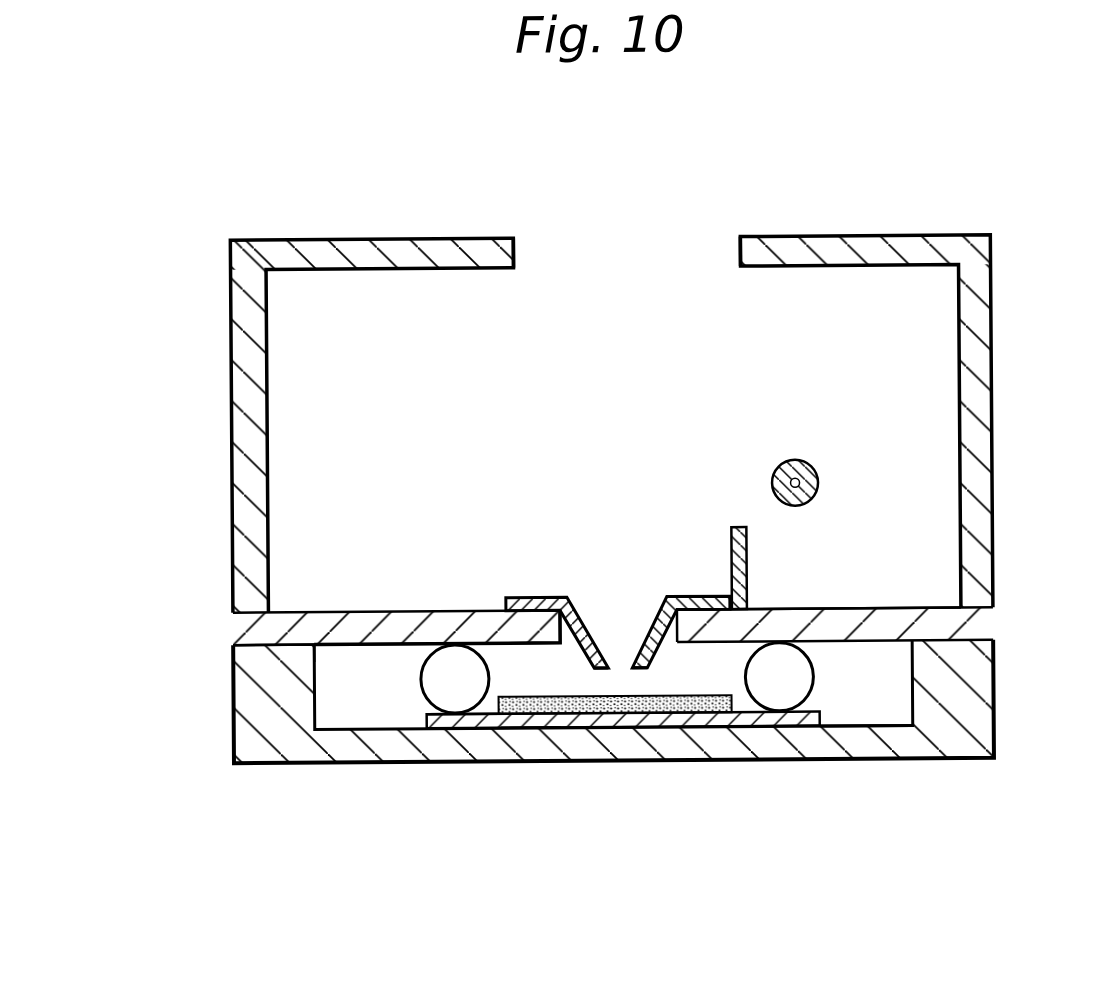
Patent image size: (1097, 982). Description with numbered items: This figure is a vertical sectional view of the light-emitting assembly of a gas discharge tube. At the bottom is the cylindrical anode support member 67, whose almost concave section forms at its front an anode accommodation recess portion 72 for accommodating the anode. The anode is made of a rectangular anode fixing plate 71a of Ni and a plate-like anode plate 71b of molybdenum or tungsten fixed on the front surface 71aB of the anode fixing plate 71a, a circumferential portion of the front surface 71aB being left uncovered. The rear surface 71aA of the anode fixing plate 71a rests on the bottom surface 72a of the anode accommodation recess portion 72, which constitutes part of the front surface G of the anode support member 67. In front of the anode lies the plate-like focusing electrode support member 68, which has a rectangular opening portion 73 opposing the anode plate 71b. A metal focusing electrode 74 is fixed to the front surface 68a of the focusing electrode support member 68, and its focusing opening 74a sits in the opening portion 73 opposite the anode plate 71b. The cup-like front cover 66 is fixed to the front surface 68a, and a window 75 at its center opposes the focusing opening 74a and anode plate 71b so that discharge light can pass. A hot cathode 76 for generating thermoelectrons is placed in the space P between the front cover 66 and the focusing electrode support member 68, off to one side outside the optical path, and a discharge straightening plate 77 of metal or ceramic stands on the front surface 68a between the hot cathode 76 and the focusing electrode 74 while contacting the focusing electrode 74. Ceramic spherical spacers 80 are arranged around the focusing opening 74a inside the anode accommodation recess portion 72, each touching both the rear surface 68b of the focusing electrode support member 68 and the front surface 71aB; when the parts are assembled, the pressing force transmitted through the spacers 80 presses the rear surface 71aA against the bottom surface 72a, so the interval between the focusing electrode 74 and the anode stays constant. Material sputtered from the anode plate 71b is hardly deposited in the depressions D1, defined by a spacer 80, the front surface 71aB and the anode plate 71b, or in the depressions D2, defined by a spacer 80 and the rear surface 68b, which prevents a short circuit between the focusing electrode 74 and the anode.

The front cover 66 is at (982, 419).
The anode support member 67 is at (665, 746).
The focusing electrode support member 68 is at (622, 602).
The front surface of the focusing electrode support member 68a is at (900, 609).
The rear surface of the focusing electrode support member 68b is at (347, 650).
The anode fixing plate 71a is at (626, 807).
The rear surface of the anode fixing plate 71aA is at (533, 727).
The front surface of the anode fixing plate 71aB is at (497, 718).
The anode plate 71b is at (578, 705).
The anode accommodation recess portion 72 is at (705, 735).
The bottom surface of the anode accommodation recess portion 72a is at (858, 724).
The opening portion 73 is at (570, 642).
The focusing electrode 74 is at (617, 571).
The focusing opening 74a is at (622, 645).
The window 75 is at (646, 275).
The hot cathode 76 is at (816, 463).
The discharge straightening plate 77 is at (748, 566).
The spherical spacer 80 is at (443, 686).
The space P is at (937, 357).
The front surface of the anode support member G is at (942, 634).
The depression D1 is at (453, 722).
The depression D2 is at (480, 611).